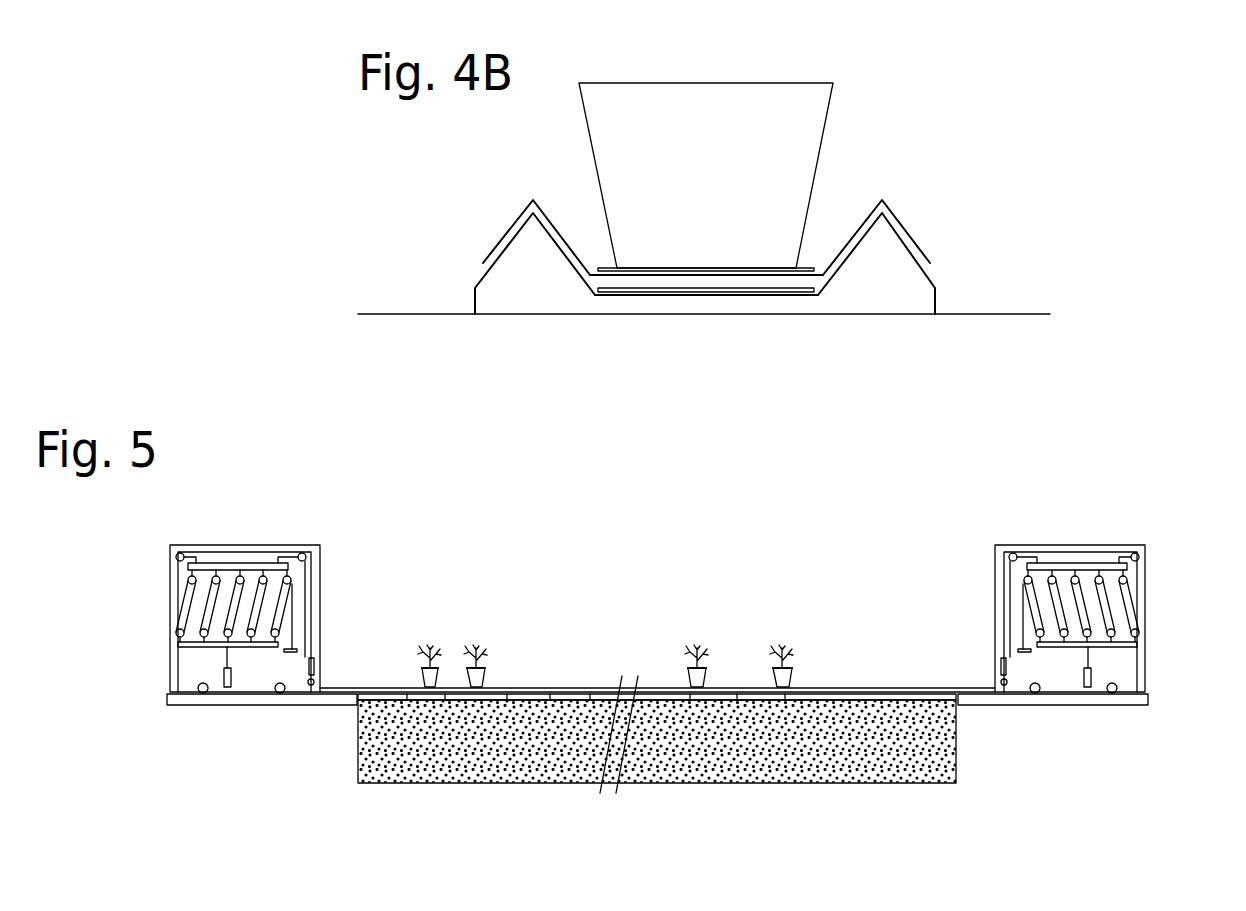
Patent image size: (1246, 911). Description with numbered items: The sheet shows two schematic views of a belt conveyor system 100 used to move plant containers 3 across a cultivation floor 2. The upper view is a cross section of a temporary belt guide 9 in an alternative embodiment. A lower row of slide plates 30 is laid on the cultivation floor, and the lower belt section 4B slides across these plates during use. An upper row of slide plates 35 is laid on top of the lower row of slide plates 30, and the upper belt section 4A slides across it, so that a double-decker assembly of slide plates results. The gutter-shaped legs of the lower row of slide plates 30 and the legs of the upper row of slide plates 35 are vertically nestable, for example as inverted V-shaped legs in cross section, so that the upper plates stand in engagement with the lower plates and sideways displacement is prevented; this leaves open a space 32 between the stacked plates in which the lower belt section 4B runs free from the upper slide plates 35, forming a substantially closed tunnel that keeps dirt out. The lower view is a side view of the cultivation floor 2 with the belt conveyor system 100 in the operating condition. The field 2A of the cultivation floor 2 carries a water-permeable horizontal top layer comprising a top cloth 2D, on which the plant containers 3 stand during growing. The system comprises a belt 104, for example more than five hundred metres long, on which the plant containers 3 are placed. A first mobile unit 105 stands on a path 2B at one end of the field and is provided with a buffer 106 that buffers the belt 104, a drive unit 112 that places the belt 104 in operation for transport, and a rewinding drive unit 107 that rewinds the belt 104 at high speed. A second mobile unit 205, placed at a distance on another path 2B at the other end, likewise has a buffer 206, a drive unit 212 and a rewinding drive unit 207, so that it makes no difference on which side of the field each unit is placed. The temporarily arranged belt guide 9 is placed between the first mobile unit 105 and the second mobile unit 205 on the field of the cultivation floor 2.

In FIG. 4B, the plant containers 3 is at (792, 118).
In FIG. 5, the plant containers 3 is at (482, 678).
In FIG. 4B, the temporary belt guide 9 is at (746, 228).
In FIG. 4B, the upper belt section 4A is at (690, 270).
In FIG. 4B, the lower belt section 4B is at (690, 294).
In FIG. 4B, the lower row of slide plates 30 is at (833, 275).
In FIG. 4B, the space 32 is at (763, 280).
In FIG. 4B, the upper row of slide plates 35 is at (898, 215).
In FIG. 5, the belt conveyor system 100 is at (657, 579).
In FIG. 5, the belt 104 is at (848, 688).
In FIG. 5, the first mobile unit 105 is at (256, 587).
In FIG. 5, the buffer 106 is at (187, 610).
In FIG. 5, the rewinding drive unit 107 is at (225, 665).
In FIG. 5, the drive unit 112 is at (315, 667).
In FIG. 5, the cultivation floor 2 is at (639, 769).
In FIG. 5, the field 2A is at (518, 762).
In FIG. 5, the path 2B is at (240, 706).
In FIG. 5, the top cloth 2D is at (718, 700).
In FIG. 5, the second mobile unit 205 is at (1078, 579).
In FIG. 5, the buffer 206 is at (1113, 603).
In FIG. 5, the rewinding drive unit 207 is at (1088, 660).
In FIG. 5, the drive unit 212 is at (1002, 670).